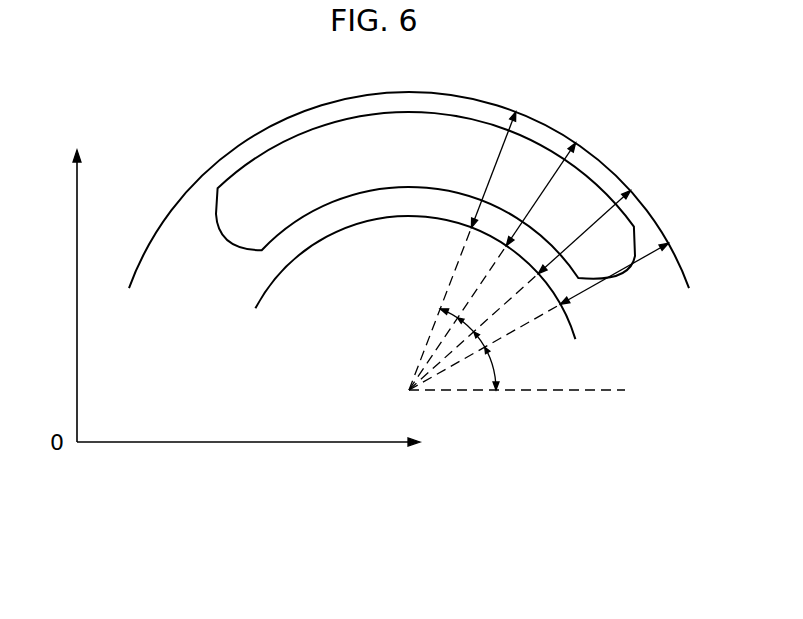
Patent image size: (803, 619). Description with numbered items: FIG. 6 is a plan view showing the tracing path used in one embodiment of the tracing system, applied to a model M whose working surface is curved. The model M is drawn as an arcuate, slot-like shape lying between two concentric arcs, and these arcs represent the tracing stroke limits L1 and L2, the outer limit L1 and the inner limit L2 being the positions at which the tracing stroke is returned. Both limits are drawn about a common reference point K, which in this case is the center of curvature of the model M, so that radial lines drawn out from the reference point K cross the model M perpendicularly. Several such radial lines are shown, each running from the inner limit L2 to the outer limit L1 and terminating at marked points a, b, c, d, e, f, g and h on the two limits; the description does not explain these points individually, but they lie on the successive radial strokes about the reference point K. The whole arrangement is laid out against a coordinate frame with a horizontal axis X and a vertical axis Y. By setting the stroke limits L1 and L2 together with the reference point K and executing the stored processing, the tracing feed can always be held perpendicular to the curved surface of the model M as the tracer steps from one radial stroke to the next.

The point a on inner radius L2 a is at (561, 311).
The point b on outer radius L1 b is at (669, 246).
The point c on outer radius L1 c is at (636, 192).
The point d on inner radius L2 d is at (537, 285).
The point e on inner radius L2 e is at (510, 256).
The point f on outer radius L1 f is at (578, 145).
The point g on outer radius L1 g is at (518, 110).
The point h on inner radius L2 h is at (469, 236).
The tracing stroke limit L1 is at (690, 289).
The tracing stroke limit L2 is at (577, 341).
The model M is at (617, 262).
The reference point K is at (410, 392).
The X axis X is at (254, 455).
The Y axis Y is at (65, 296).